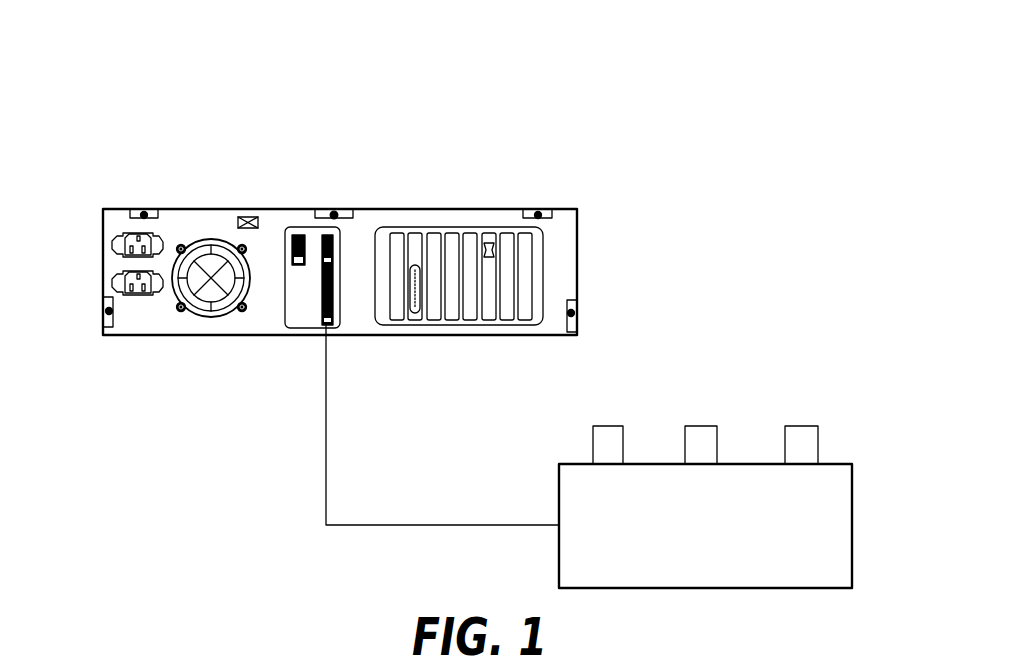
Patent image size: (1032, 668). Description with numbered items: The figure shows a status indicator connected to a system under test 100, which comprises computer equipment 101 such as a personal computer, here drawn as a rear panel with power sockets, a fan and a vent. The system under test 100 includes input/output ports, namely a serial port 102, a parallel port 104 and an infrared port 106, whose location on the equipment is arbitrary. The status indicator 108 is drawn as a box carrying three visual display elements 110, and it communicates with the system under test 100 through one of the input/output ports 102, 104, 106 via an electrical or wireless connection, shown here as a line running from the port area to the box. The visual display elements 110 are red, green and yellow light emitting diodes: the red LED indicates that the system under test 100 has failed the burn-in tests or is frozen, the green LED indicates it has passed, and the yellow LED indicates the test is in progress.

The system under test 100 is at (608, 97).
The computer equipment 101 is at (103, 272).
The serial port 102 is at (322, 258).
The parallel port 104 is at (334, 312).
The infrared port 106 is at (238, 224).
The status indicator 108 is at (853, 545).
The visual display elements 110 is at (608, 426).